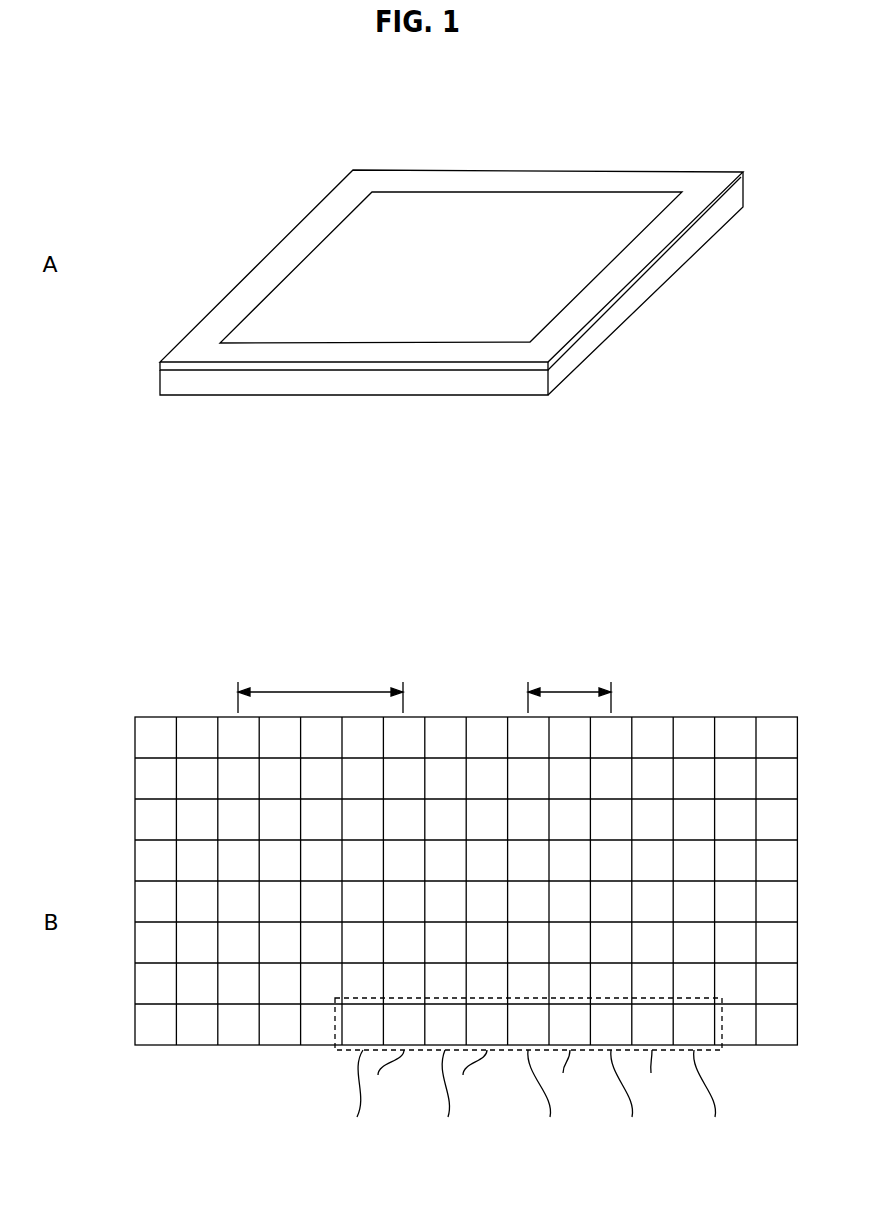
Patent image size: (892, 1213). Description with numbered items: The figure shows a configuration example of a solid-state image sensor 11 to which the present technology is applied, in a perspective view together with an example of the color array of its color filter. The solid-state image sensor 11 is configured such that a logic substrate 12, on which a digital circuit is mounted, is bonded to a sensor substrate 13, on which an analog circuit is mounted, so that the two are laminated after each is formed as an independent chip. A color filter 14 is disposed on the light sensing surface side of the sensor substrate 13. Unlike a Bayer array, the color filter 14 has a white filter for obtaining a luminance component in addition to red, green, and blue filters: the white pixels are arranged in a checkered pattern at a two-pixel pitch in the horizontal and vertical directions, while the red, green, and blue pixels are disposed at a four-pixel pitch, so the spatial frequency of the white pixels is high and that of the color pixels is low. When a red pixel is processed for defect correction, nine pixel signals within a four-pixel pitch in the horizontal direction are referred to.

In FIG. 1A, the solid-state image sensor 11 is at (457, 237).
In FIG. 1A, the logic substrate 12 is at (687, 245).
In FIG. 1A, the sensor substrate 13 is at (702, 182).
In FIG. 1A, the color filter 14 is at (560, 207).
In FIG. 1B, the color filter 14 is at (707, 683).